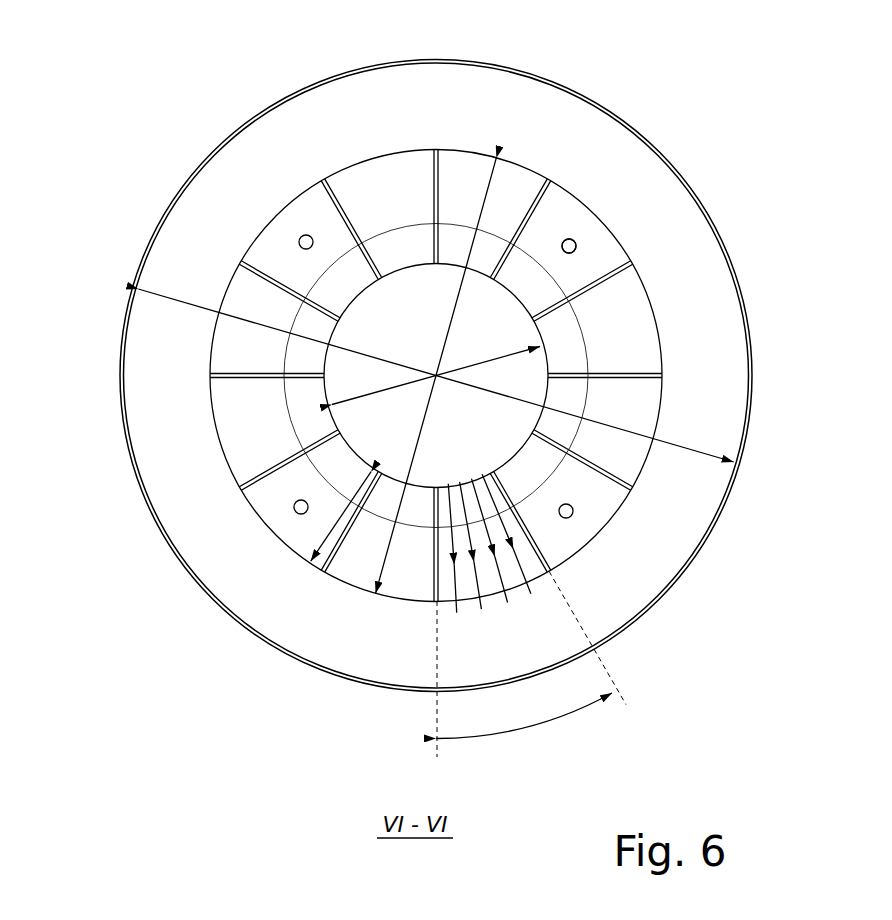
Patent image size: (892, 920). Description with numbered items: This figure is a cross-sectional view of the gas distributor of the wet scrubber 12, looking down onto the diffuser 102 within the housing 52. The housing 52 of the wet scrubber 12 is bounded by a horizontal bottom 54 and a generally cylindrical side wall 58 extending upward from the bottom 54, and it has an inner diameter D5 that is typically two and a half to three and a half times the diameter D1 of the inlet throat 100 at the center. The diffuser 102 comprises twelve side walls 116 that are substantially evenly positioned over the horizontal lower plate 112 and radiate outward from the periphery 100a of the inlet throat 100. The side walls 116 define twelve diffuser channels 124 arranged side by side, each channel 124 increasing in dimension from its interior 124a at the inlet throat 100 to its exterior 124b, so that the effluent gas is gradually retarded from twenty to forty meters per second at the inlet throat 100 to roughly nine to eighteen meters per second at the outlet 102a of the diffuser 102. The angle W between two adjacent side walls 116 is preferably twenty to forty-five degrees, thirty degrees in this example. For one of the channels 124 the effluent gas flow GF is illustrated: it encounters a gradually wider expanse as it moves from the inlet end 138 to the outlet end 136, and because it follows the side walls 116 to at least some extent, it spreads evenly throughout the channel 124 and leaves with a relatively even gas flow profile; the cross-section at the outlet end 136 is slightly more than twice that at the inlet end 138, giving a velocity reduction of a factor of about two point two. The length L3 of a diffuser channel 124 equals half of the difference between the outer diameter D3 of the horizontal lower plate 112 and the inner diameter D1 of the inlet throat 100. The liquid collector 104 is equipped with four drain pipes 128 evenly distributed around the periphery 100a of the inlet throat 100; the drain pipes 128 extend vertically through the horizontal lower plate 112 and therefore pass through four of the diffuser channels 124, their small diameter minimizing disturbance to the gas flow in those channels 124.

The wet scrubber 12 is at (202, 631).
The housing 52 is at (146, 250).
The horizontal bottom 54 is at (222, 160).
The cylindrical side wall 58 is at (163, 537).
The inlet throat 100 is at (407, 264).
The periphery of inlet throat 100a is at (362, 467).
The diffuser 102 is at (418, 146).
The outlet of diffuser 102a is at (303, 618).
The liquid collector 104 is at (587, 251).
The horizontal lower plate 112 is at (512, 182).
The side walls 116 is at (255, 270).
The diffuser channels 124 is at (235, 297).
The interior of diffuser channel 124a is at (547, 353).
The exterior of diffuser channel 124b is at (662, 355).
The drain pipes 128 is at (305, 235).
The outlet end 136 is at (515, 592).
The inlet end 138 is at (470, 479).
The inner diameter of inlet throat D1 is at (522, 349).
The outer diameter of horizontal lower plate D3 is at (410, 467).
The inner diameter of wet scrubber housing D5 is at (397, 364).
The length of diffuser channel L3 is at (341, 517).
The effluent gas flow GF is at (545, 576).
The angle between adjacent side walls W is at (524, 727).